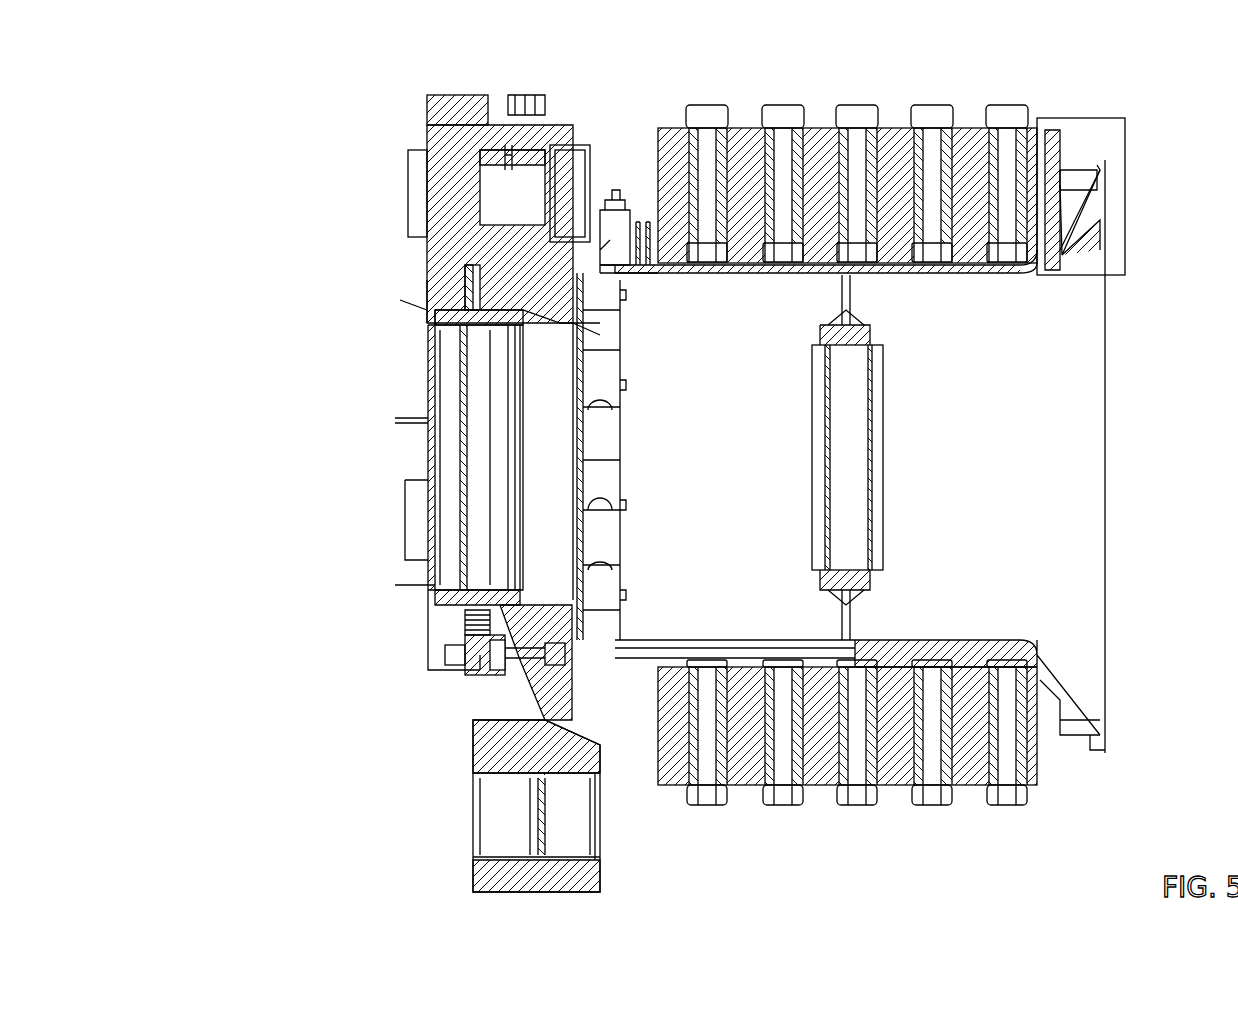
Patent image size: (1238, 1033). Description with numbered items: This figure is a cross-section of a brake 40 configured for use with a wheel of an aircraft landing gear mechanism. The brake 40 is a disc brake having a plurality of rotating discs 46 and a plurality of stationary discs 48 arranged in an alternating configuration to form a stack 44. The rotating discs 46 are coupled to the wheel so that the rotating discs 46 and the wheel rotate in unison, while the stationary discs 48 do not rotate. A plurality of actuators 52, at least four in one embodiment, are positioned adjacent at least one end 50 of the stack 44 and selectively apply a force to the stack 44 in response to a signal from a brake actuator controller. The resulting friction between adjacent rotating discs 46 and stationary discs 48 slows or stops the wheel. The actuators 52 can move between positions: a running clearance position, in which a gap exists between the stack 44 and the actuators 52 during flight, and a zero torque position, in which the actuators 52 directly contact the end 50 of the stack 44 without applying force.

The brake 40 is at (312, 147).
The stack 44 is at (976, 92).
The rotating discs 46 is at (713, 140).
The stationary discs 48 is at (680, 140).
The end 50 is at (653, 190).
The actuators 52 is at (640, 225).